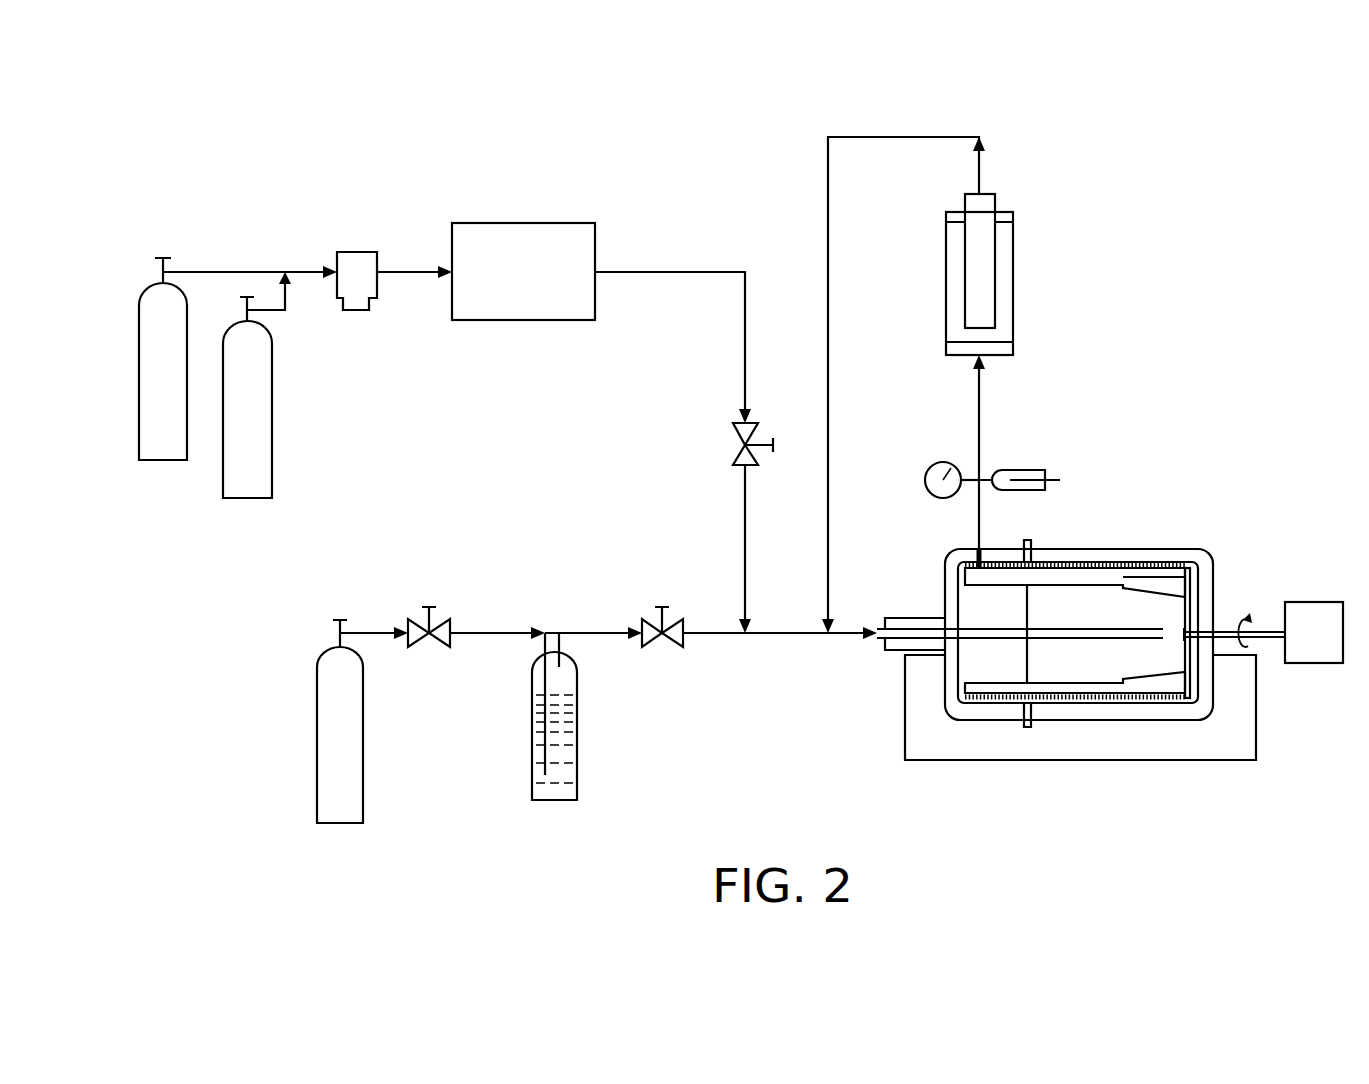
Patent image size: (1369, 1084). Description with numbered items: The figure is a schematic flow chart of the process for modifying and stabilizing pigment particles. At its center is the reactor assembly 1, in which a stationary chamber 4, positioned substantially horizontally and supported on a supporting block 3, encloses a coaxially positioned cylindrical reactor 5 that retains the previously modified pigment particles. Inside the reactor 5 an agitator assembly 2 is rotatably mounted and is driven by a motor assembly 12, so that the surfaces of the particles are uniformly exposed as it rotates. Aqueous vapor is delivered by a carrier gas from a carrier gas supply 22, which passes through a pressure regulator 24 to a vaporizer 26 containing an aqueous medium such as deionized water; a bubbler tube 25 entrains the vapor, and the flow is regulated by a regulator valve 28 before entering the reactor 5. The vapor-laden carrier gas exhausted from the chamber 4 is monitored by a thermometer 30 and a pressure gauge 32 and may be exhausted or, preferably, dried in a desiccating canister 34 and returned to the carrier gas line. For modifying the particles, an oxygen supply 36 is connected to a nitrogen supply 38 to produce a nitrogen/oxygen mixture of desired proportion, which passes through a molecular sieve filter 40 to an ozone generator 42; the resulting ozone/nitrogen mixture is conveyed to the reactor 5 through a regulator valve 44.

The reactor assembly 1 is at (1083, 684).
The agitator assembly 2 is at (1190, 582).
The supporting block 3 is at (1256, 745).
The stationary chamber 4 is at (1215, 600).
The cylindrical reactor 5 is at (1202, 682).
The motor assembly 12 is at (1315, 601).
The carrier gas supply 22 is at (338, 825).
The pressure regulator 24 is at (412, 618).
The bubbler tube 25 is at (545, 735).
The vaporizer 26 is at (550, 803).
The regulator valve 28 is at (648, 618).
The thermometer 30 is at (1052, 477).
The pressure gauge 32 is at (930, 466).
The desiccating canister 34 is at (1013, 290).
The oxygen supply 36 is at (163, 463).
The nitrogen supply 38 is at (250, 500).
The molecular sieve filter 40 is at (358, 250).
The ozone generator 42 is at (508, 223).
The regulator valve 44 is at (733, 452).